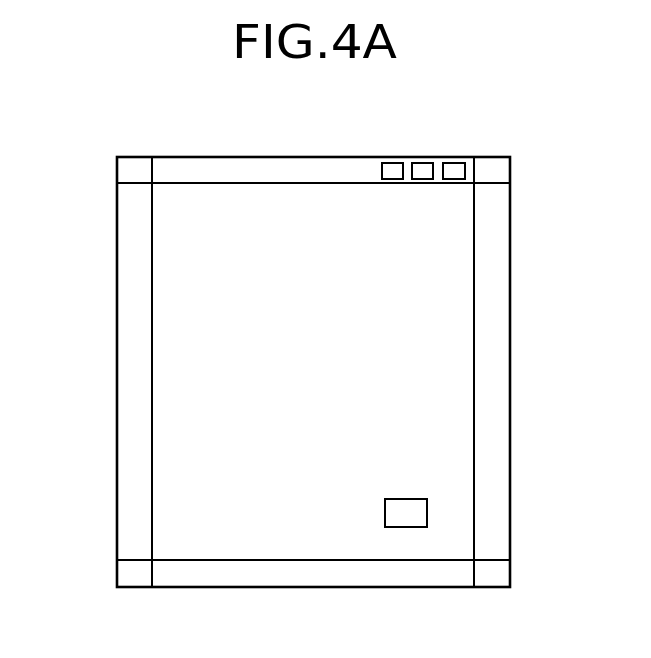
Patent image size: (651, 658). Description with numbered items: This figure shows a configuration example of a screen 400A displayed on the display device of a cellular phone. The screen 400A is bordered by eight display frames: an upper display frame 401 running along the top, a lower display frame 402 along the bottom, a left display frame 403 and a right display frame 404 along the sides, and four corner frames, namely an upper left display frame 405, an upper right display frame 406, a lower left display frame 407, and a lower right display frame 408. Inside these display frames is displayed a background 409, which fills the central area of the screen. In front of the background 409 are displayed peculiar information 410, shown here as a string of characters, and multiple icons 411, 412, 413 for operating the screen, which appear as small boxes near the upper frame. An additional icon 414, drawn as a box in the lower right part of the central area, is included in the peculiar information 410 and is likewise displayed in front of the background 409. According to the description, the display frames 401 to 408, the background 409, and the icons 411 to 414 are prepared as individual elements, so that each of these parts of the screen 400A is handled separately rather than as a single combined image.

The screen 400A is at (520, 138).
The upper display frame 401 is at (300, 171).
The lower display frame 402 is at (320, 580).
The left display frame 403 is at (130, 363).
The right display frame 404 is at (495, 375).
The upper left display frame 405 is at (128, 172).
The upper right display frame 406 is at (497, 175).
The lower left display frame 407 is at (130, 573).
The lower right display frame 408 is at (497, 575).
The background 409 is at (450, 435).
The peculiar information 410 is at (378, 282).
The icon 411 is at (392, 181).
The icon 412 is at (422, 181).
The icon 413 is at (453, 181).
The icon 414 is at (428, 512).